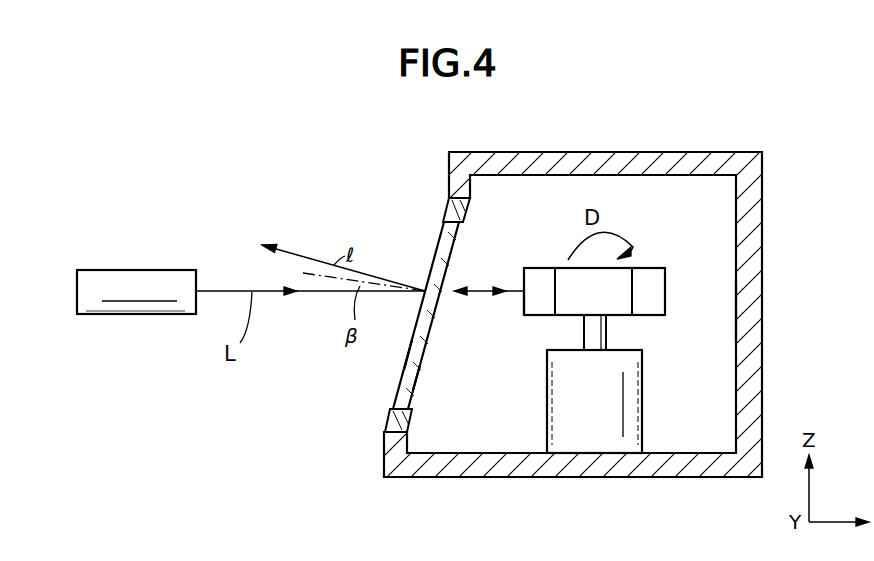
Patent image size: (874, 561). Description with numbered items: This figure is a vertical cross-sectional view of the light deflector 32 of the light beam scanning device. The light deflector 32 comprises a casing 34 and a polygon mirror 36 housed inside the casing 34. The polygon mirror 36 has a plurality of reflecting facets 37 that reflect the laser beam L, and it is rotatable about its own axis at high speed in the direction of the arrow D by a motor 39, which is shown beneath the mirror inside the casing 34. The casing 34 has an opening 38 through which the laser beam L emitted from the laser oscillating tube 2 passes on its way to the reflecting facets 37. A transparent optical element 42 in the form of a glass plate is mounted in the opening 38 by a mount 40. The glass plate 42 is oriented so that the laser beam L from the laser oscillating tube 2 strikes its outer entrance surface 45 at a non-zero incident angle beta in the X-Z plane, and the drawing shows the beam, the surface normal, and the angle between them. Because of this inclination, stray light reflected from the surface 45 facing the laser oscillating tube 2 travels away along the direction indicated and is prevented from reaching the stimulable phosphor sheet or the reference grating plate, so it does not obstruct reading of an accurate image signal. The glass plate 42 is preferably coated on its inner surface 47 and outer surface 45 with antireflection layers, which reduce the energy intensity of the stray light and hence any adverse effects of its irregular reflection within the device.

The laser oscillating tube 2 is at (162, 302).
The light deflector 32 is at (682, 146).
The casing 34 is at (755, 308).
The polygon mirror 36 is at (655, 268).
The reflecting facets 37 is at (538, 305).
The opening 38 is at (453, 258).
The motor 39 is at (625, 408).
The mount 40 is at (388, 420).
The transparent optical element 42 is at (437, 260).
The outer entrance surface 45 is at (405, 370).
The inner surface of window plate 47 is at (417, 390).